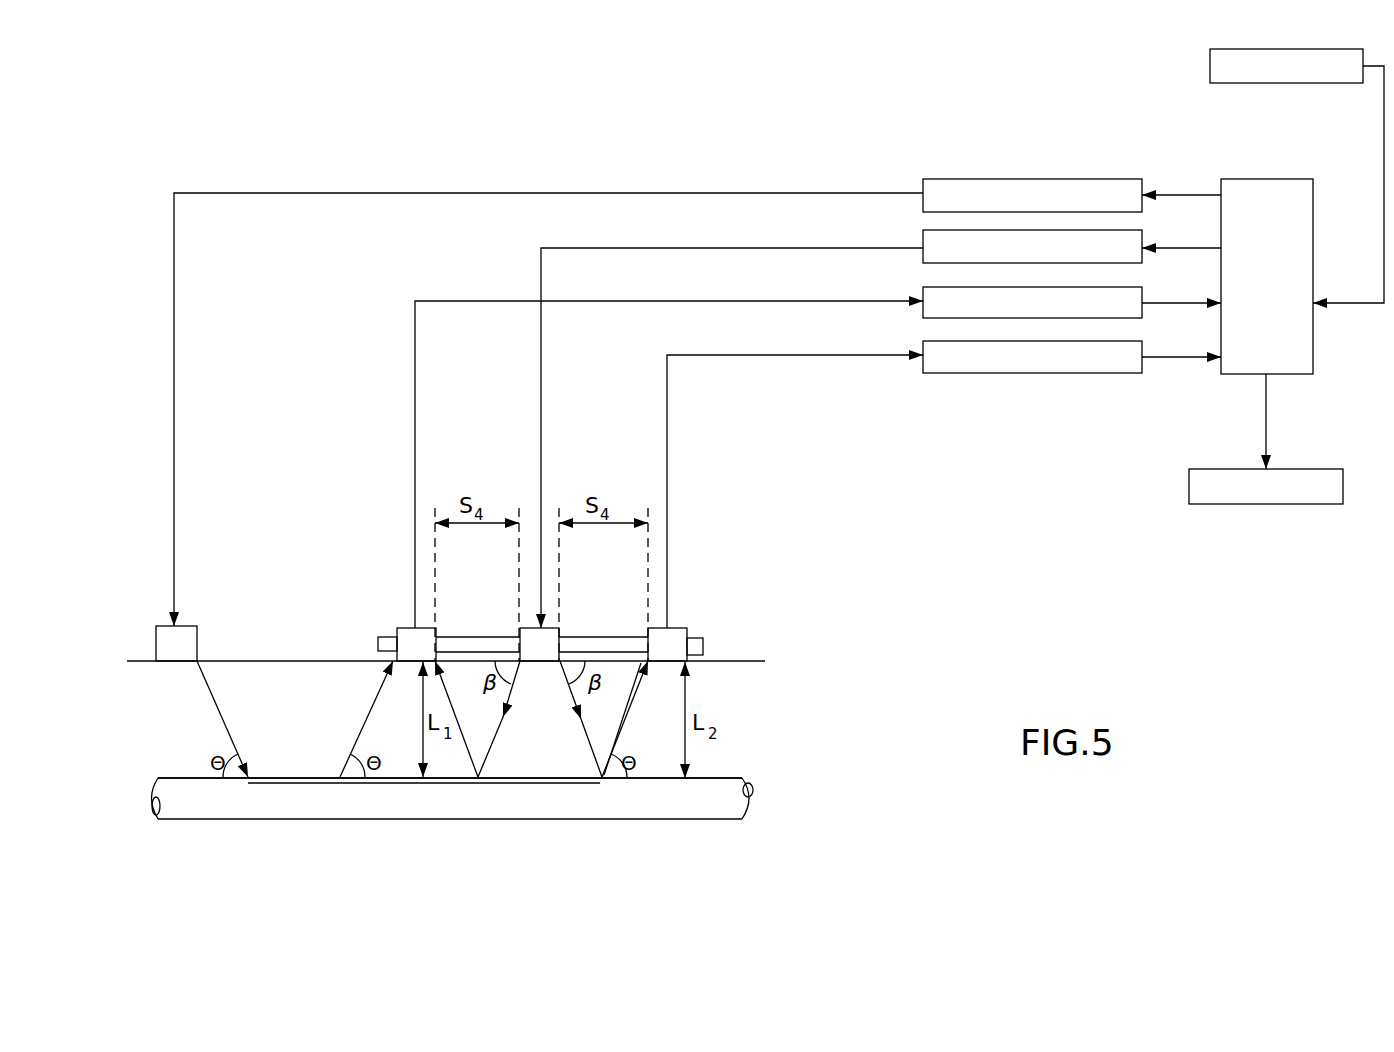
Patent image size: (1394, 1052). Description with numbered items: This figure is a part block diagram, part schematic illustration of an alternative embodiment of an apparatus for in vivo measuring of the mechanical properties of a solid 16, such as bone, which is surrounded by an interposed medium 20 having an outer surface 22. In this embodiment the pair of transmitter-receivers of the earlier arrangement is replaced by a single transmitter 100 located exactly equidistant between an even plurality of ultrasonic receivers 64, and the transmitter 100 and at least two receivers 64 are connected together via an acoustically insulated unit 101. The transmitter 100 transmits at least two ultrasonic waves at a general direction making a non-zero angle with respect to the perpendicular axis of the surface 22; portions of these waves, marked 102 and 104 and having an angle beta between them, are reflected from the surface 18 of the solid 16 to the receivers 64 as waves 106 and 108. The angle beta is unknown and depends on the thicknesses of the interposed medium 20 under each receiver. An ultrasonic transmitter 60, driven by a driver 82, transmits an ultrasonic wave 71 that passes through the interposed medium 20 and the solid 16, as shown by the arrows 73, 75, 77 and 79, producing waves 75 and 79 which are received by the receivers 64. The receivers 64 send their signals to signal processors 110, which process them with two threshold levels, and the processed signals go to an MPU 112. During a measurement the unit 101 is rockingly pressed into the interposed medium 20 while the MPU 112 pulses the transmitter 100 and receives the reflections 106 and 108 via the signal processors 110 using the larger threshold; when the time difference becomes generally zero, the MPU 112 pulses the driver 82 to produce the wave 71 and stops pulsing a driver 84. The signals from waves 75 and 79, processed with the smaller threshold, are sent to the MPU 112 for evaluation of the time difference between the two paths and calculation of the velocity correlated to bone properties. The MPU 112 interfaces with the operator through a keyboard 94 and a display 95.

The solid 16 is at (752, 810).
The surface 18 is at (742, 778).
The interposed medium 20 is at (757, 715).
The surface 22 is at (763, 661).
The ultrasonic transmitter 60 is at (197, 645).
The ultrasonic receivers 64 is at (410, 642).
The ultrasonic wave 71 is at (238, 707).
The arrow 73 is at (327, 783).
The ultrasonic wave 75 is at (368, 725).
The arrow 77 is at (488, 783).
The ultrasonic wave 79 is at (620, 725).
The driver 82 is at (936, 179).
The driver 84 is at (923, 232).
The keyboard 94 is at (1210, 69).
The display 95 is at (1189, 478).
The transmitter 100 is at (530, 637).
The acoustically insulated unit 101 is at (705, 638).
The ultrasonic wave 102 is at (490, 750).
The ultrasonic wave 104 is at (597, 753).
The reflected wave 106 is at (467, 757).
The reflected wave 108 is at (607, 742).
The signal processors 110 is at (923, 289).
The MPU 112 is at (1313, 335).